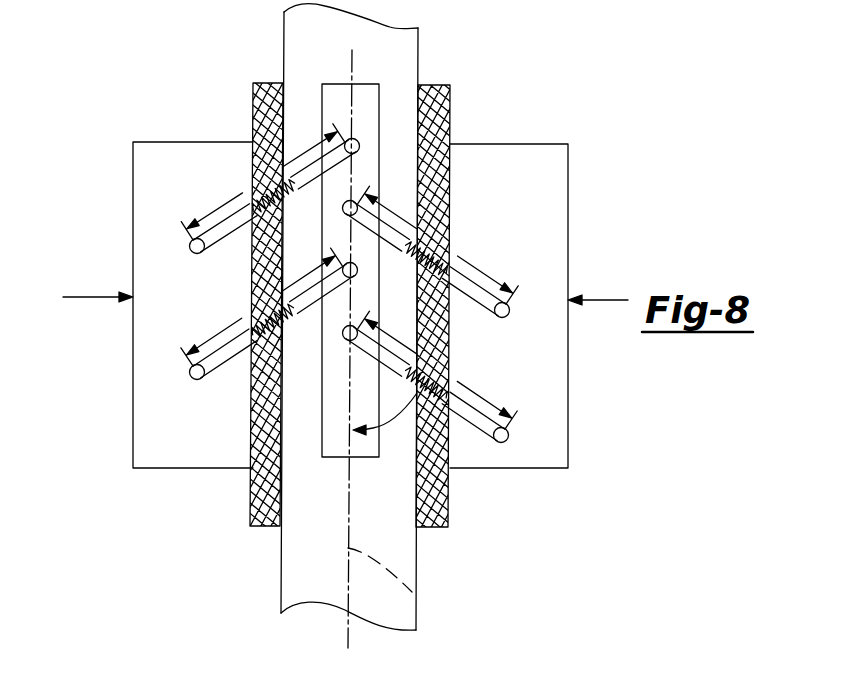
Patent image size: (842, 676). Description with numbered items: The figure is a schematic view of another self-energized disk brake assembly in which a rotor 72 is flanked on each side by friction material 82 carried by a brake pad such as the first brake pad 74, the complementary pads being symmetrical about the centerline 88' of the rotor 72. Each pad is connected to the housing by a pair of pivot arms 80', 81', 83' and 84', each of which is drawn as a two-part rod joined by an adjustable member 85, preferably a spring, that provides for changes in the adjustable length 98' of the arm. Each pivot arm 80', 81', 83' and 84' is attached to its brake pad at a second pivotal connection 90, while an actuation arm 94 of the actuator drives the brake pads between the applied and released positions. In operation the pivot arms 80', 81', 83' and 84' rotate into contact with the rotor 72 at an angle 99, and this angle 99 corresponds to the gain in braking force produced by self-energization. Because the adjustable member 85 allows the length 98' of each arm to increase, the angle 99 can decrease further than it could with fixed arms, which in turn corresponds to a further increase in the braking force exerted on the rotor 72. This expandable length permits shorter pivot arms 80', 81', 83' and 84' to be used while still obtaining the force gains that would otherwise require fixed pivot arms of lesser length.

The rotor 72 is at (290, 585).
The first brake pad 74 is at (527, 155).
The pivot arm 80' is at (436, 251).
The pivot arm 81' is at (221, 192).
The friction material 82 is at (450, 105).
The pivot arm 83' is at (220, 313).
The pivot arm 84' is at (451, 370).
The adjustable member 85 is at (289, 307).
The centerline 88' is at (407, 578).
The second pivotal connection 90 is at (525, 433).
The actuation arm 94 is at (478, 445).
The adjustable length 98' is at (320, 276).
The angle 99 is at (400, 422).